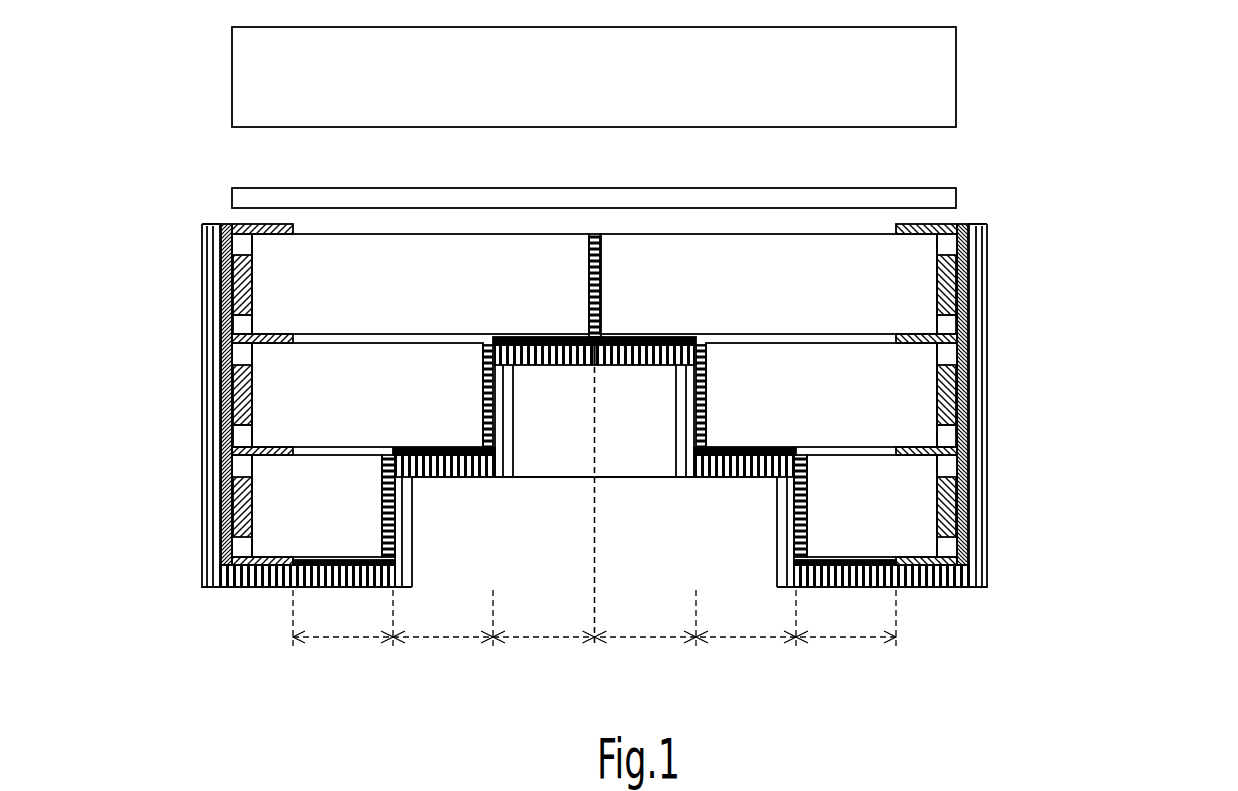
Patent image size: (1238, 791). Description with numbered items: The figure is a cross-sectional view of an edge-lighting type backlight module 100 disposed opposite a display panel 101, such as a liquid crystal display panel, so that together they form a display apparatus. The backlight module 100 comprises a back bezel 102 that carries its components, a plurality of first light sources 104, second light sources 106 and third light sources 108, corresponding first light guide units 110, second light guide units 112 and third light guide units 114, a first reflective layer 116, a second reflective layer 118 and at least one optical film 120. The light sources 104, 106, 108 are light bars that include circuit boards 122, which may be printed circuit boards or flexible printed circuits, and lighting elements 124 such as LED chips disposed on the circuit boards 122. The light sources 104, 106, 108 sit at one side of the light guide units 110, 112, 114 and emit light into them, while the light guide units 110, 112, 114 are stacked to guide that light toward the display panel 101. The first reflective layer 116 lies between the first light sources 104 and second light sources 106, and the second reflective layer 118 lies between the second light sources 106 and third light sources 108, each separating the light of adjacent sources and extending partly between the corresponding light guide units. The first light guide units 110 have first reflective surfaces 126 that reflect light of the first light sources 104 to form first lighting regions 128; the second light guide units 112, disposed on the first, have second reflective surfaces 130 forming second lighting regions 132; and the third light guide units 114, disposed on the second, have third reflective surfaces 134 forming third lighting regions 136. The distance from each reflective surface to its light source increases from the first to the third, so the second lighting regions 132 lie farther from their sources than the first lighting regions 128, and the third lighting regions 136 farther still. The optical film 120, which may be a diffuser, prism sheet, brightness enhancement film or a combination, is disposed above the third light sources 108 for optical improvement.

The backlight module 100 is at (935, 602).
The display panel 101 is at (618, 95).
The back bezel 102 is at (210, 552).
The first light sources 104 is at (967, 502).
The second light sources 106 is at (967, 383).
The third light sources 108 is at (967, 277).
The first light guide units 110 is at (305, 493).
The second light guide units 112 is at (305, 388).
The third light guide units 114 is at (305, 275).
The first reflective layer 116 is at (967, 433).
The second reflective layer 118 is at (967, 322).
The optical film 120 is at (909, 188).
The circuit boards 122 is at (220, 320).
The lighting elements 124 is at (224, 276).
The first reflective surfaces 126 is at (795, 575).
The first lighting regions 128 is at (594, 618).
The second reflective surfaces 130 is at (700, 458).
The second lighting regions 132 is at (594, 618).
The third reflective surfaces 134 is at (653, 348).
The third lighting regions 136 is at (594, 507).